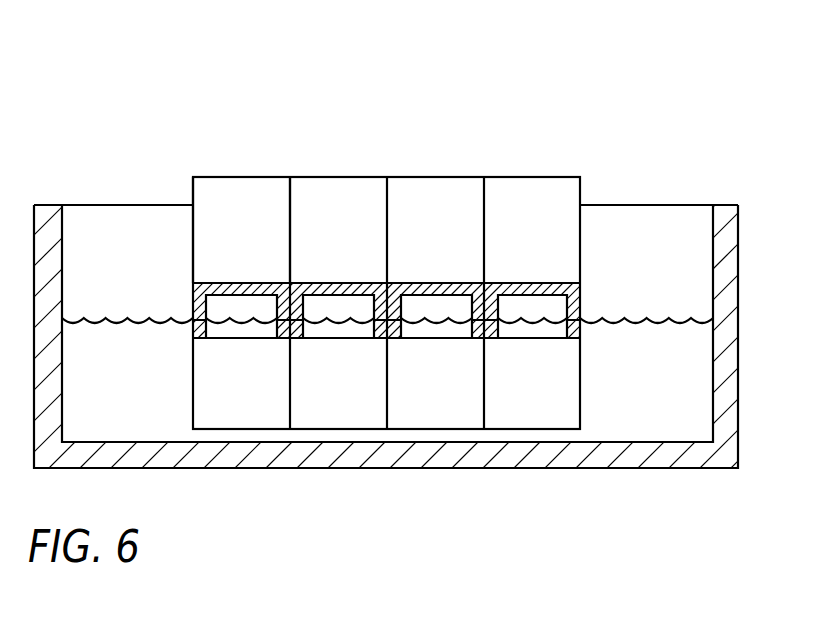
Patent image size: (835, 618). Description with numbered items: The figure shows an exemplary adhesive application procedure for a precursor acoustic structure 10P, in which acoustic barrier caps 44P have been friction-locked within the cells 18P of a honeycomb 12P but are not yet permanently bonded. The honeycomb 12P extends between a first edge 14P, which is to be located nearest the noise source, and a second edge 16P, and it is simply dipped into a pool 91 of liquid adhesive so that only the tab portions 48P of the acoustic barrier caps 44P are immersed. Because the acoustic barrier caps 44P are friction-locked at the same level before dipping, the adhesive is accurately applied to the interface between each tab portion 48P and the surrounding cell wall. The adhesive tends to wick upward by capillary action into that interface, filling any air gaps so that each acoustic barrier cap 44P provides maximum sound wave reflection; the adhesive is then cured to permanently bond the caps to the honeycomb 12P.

The precursor acoustic structure 10P is at (384, 130).
The honeycomb 12P is at (580, 190).
The first edge 14P is at (238, 428).
The second edge 16P is at (543, 177).
The cells 18P is at (235, 222).
The acoustic barrier caps 44P is at (330, 283).
The tab portions 48P is at (193, 297).
The pool of liquid adhesive 91 is at (683, 374).